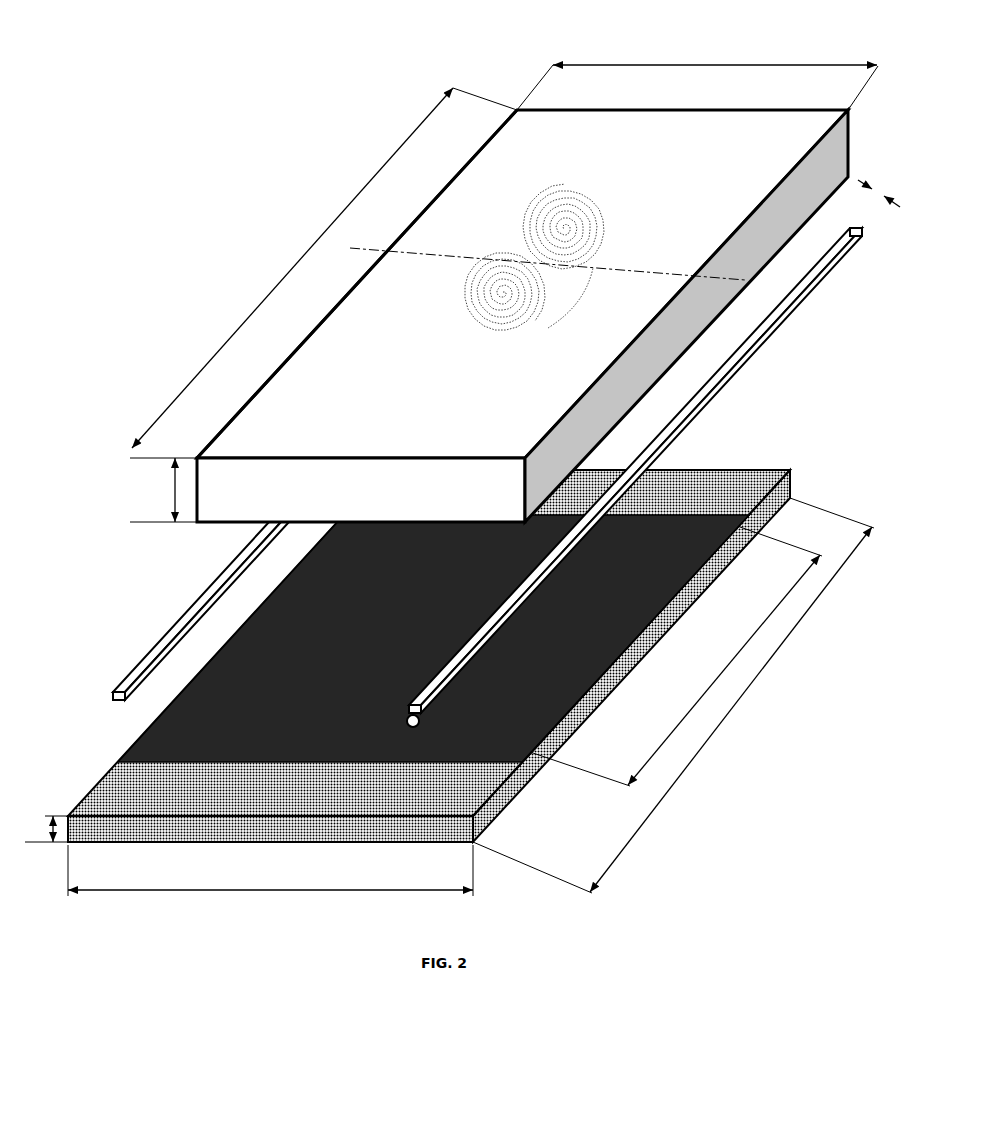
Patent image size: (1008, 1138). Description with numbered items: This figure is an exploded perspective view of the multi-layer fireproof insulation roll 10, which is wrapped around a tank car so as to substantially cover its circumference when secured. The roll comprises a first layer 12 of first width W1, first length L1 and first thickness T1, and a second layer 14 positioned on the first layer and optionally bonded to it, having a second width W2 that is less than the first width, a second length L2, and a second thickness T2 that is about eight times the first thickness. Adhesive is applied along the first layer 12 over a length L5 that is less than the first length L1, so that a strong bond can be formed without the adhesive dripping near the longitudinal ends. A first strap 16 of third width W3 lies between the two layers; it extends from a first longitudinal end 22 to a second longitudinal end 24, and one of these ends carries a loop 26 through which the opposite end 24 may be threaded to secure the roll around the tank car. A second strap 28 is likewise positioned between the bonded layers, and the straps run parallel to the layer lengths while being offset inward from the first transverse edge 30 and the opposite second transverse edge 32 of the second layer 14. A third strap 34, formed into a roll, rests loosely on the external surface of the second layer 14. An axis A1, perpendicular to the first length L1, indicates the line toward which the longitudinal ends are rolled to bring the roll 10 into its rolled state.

The multi-layer fireproof insulation roll 10 is at (567, 41).
The first layer 12 is at (485, 792).
The second layer 14 is at (539, 299).
The first strap 16 is at (743, 367).
The first longitudinal end 22 is at (410, 713).
The second longitudinal end 24 is at (864, 240).
The loop 26 is at (410, 726).
The second strap 28 is at (162, 638).
The first transverse edge 30 is at (808, 152).
The second transverse edge 32 is at (467, 157).
The third strap 34 is at (583, 180).
The axis A1 is at (363, 252).
The first width W1 is at (235, 890).
The second width W2 is at (677, 63).
The third width W3 is at (879, 185).
The first length L1 is at (737, 710).
The second length L2 is at (247, 317).
The length of adhesive application L5 is at (720, 672).
The first thickness T1 is at (46, 829).
The second thickness T2 is at (175, 483).